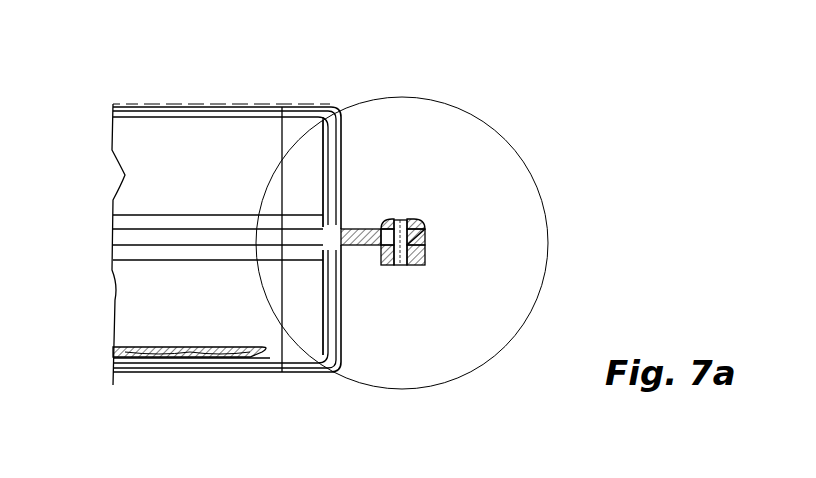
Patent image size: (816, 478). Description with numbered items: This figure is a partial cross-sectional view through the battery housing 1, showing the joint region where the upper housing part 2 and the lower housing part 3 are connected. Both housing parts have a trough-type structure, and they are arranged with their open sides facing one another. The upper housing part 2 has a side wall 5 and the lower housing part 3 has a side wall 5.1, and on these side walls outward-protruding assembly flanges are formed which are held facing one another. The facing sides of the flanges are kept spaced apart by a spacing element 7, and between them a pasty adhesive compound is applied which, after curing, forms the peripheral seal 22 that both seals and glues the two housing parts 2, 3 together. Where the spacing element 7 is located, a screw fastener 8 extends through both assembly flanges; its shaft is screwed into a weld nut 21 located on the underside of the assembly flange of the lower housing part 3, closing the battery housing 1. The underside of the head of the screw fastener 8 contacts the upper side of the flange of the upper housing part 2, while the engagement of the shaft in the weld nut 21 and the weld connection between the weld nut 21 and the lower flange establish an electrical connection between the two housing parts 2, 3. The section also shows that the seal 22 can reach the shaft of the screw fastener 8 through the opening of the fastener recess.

The battery housing 1 is at (342, 81).
The upper housing part 2 is at (166, 100).
The lower housing part 3 is at (221, 380).
The side wall 5 is at (347, 164).
The side wall 5.1 is at (347, 305).
The spacing element 7 is at (430, 236).
The screw fastener 8 is at (412, 214).
The weld nut 21 is at (428, 257).
The seal 22 is at (374, 226).